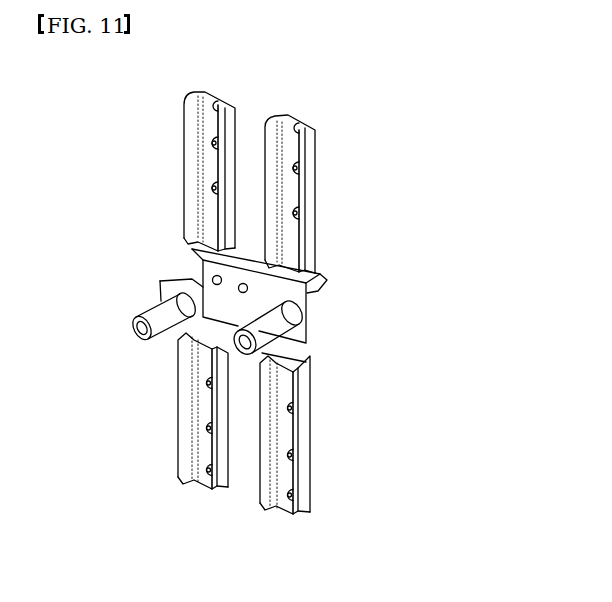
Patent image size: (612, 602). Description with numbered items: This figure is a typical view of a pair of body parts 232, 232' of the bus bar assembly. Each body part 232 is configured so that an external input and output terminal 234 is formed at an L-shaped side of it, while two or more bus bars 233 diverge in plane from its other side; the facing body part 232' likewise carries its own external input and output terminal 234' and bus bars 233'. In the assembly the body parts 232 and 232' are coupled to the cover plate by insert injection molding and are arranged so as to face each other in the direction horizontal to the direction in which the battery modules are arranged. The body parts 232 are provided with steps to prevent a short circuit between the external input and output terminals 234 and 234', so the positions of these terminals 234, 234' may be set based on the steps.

The body part 232 is at (361, 435).
The body part 232' is at (307, 238).
The bus bar 233 is at (149, 411).
The bus bar 233' is at (152, 171).
The external input and output terminal 234 is at (113, 330).
The external input and output terminal 234' is at (320, 327).